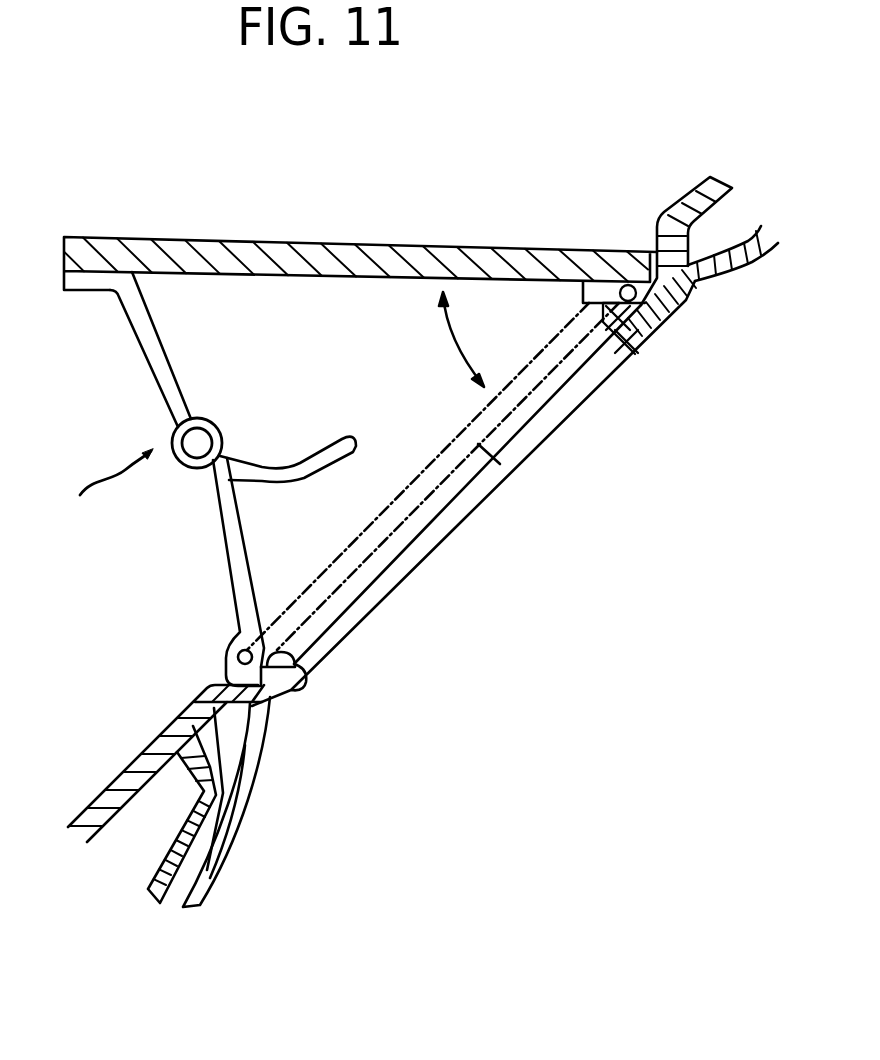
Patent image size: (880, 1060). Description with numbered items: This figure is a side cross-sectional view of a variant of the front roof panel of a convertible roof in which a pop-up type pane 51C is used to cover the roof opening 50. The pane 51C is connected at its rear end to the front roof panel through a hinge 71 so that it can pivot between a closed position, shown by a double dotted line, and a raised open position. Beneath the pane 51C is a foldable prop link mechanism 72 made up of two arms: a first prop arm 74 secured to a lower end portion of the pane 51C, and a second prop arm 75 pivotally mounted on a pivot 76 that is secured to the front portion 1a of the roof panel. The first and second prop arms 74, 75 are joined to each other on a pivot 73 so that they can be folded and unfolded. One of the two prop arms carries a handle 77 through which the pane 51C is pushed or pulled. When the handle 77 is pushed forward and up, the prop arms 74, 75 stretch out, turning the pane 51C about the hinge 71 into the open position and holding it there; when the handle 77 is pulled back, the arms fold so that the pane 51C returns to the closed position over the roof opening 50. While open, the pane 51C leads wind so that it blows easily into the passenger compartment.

The front portion 1a is at (118, 777).
The roof opening 50 is at (381, 615).
The pop-up type pane 51C is at (350, 244).
The hinge 71 is at (645, 340).
The foldable prop link mechanism 72 is at (92, 483).
The pivot 73 is at (208, 428).
The first prop arm 74 is at (150, 353).
The second prop arm 75 is at (228, 548).
The pivot 76 is at (236, 647).
The handle 77 is at (316, 478).